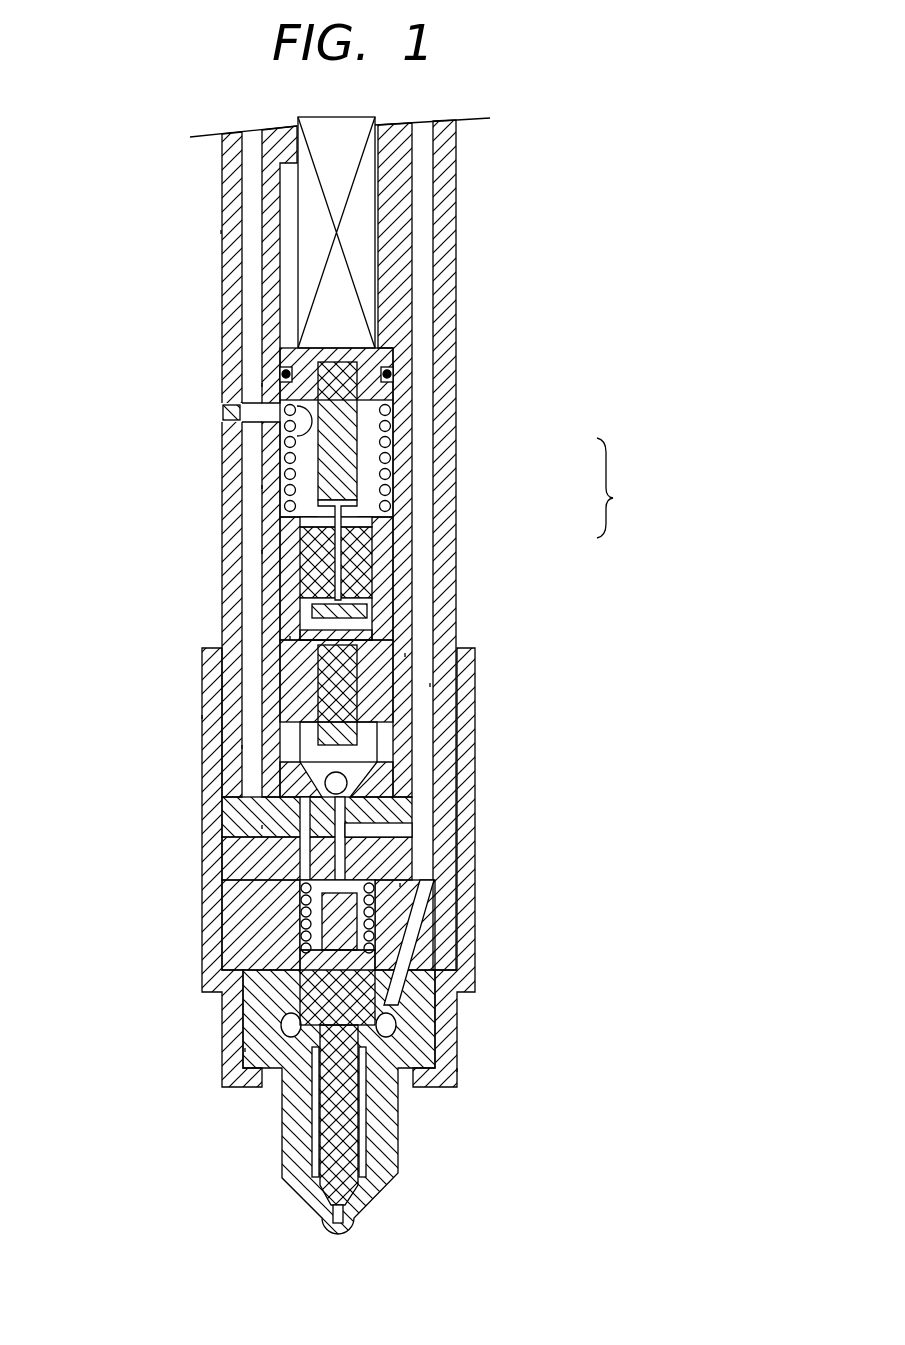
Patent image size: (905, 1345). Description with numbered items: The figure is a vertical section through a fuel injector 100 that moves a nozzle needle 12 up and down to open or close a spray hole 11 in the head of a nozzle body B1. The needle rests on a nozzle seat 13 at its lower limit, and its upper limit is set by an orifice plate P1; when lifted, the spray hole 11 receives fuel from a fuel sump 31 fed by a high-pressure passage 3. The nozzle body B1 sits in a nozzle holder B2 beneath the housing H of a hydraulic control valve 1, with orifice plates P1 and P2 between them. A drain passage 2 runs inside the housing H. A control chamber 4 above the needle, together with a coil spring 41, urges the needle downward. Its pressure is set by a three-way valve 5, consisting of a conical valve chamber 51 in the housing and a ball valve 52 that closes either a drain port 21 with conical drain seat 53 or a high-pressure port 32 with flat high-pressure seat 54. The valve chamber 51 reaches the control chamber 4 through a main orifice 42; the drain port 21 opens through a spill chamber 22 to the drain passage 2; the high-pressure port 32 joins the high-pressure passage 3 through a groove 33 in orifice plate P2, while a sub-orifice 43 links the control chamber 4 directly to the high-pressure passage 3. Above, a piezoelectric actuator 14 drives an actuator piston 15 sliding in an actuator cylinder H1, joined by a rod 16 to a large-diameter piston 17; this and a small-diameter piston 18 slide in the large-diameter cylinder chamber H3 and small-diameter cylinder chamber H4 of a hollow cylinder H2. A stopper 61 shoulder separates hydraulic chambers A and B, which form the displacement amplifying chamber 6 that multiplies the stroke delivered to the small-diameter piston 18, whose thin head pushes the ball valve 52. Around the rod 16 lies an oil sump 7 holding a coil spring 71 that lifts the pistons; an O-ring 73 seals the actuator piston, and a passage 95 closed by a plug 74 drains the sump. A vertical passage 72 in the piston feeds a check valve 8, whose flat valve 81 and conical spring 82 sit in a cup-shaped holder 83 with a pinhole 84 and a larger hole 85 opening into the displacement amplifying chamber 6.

The fuel injector 100 is at (206, 163).
The hydraulic control valve 1 is at (291, 337).
The drain passage 2 is at (221, 207).
The high-pressure passage 3 is at (436, 205).
The control chamber 4 is at (410, 915).
The three-way valve 5 is at (300, 780).
The displacement amplifying chamber 6 is at (412, 632).
The oil sump 7 is at (283, 438).
The check valve 8 is at (611, 488).
The spray hole 11 is at (320, 1237).
The nozzle needle 12 is at (400, 1125).
The nozzle seat 13 is at (358, 1160).
The piezoelectric actuator 14 is at (365, 183).
The actuator piston 15 is at (398, 312).
The rod 16 is at (398, 395).
The large-diameter piston 17 is at (398, 500).
The small-diameter piston 18 is at (410, 723).
The drain port 21 is at (242, 747).
The spill chamber 22 is at (204, 717).
The fuel sump 31 is at (400, 1037).
The high-pressure port 32 is at (262, 850).
The groove 33 is at (390, 845).
The coil spring 41 is at (222, 962).
The main orifice 42 is at (300, 900).
The sub-orifice 43 is at (400, 885).
The valve chamber 51 is at (225, 800).
The ball valve 52 is at (380, 825).
The drain seat 53 is at (420, 775).
The high-pressure seat 54 is at (400, 803).
The stopper 61 is at (285, 680).
The coil spring 71 is at (392, 430).
The vertical passage 72 is at (282, 517).
The O-ring 73 is at (392, 372).
The plug 74 is at (236, 408).
The flat valve 81 is at (383, 520).
The conical spring 82 is at (372, 580).
The holder 83 is at (300, 606).
The pinhole 84 is at (282, 575).
The hole 85 is at (372, 598).
The passage 95 is at (272, 380).
The housing H is at (221, 232).
The actuator cylinder H1 is at (262, 385).
The hollow cylinder H2 is at (262, 487).
The large-diameter cylinder chamber H3 is at (262, 552).
The small-diameter cylinder chamber H4 is at (430, 685).
The hydraulic chamber A is at (405, 655).
The hydraulic chamber B is at (292, 638).
The nozzle body B1 is at (247, 1050).
The nozzle holder B2 is at (460, 1070).
The orifice plate P1 is at (262, 870).
The orifice plate P2 is at (262, 827).